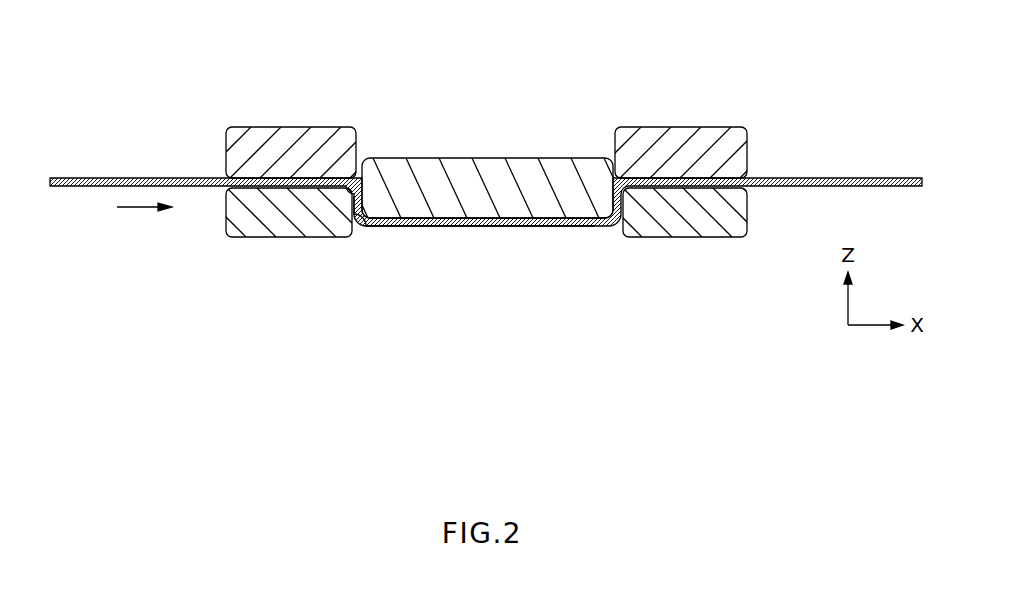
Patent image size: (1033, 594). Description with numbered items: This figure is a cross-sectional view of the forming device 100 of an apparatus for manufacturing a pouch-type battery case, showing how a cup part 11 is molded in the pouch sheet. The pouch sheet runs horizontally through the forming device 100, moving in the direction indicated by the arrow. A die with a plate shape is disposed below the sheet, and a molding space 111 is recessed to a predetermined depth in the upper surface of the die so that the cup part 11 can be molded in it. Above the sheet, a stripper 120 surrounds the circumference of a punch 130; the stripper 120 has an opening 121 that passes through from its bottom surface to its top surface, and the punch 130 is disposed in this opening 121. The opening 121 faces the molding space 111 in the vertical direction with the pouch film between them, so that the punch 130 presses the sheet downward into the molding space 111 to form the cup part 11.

The forming device 100 is at (158, 178).
The cup part 11 is at (470, 228).
The molding space 111 is at (356, 223).
The stripper 120 is at (690, 140).
The opening 121 is at (369, 143).
The punch 130 is at (493, 158).